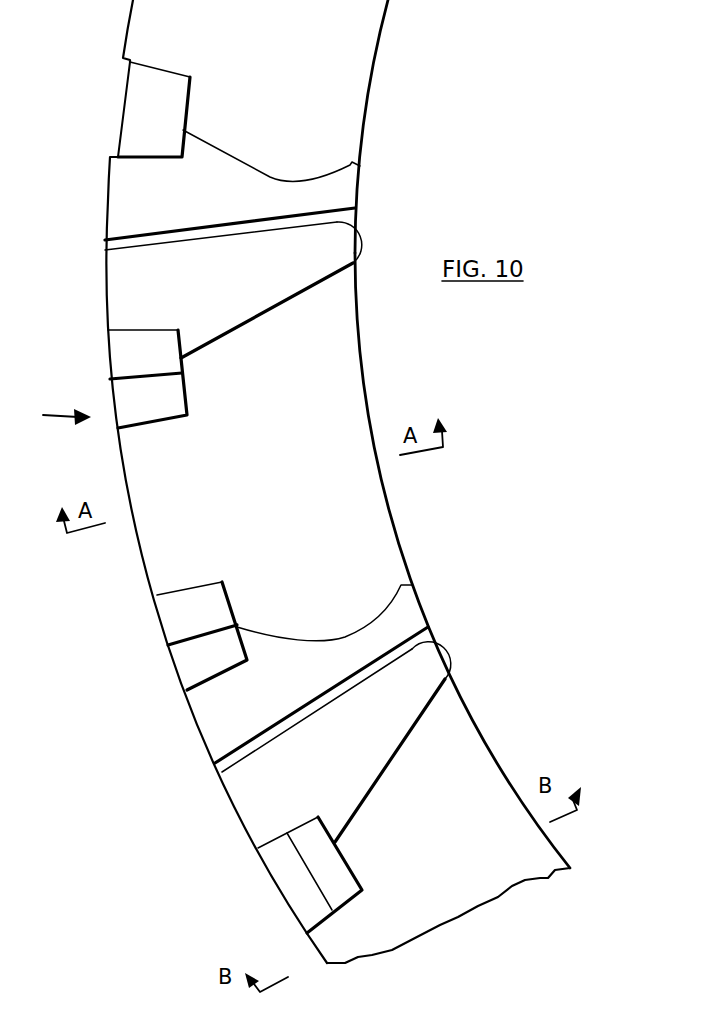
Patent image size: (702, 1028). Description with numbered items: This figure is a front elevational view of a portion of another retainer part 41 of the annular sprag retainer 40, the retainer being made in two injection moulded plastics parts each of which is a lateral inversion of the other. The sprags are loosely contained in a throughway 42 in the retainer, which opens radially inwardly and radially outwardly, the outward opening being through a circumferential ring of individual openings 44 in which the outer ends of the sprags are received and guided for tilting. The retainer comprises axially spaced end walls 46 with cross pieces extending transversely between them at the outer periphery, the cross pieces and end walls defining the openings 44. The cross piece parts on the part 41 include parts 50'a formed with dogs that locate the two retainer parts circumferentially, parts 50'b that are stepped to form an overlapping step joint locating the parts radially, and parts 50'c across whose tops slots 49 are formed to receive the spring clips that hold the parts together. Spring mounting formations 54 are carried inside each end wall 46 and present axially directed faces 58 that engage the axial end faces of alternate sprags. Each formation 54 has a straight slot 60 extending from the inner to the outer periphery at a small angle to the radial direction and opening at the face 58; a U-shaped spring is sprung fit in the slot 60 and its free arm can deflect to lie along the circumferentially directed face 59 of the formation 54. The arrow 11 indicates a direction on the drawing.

The direction of rotation arrow 11 is at (67, 430).
The sprag retainer 40 is at (99, 178).
The retainer part 41 is at (164, 543).
The throughway 42 is at (347, 430).
The openings 44 is at (134, 37).
The end walls 46 is at (341, 99).
The slots 49 is at (120, 117).
The cross piece parts with dogs 50'a is at (227, 510).
The stepped cross piece parts 50'b is at (276, 875).
The slotted cross piece parts 50'c is at (207, 121).
The spring mounting formation 54 is at (126, 298).
The axially directed face 58 is at (260, 278).
The circumferentially directed face 59 is at (245, 327).
The slot 60 is at (277, 224).